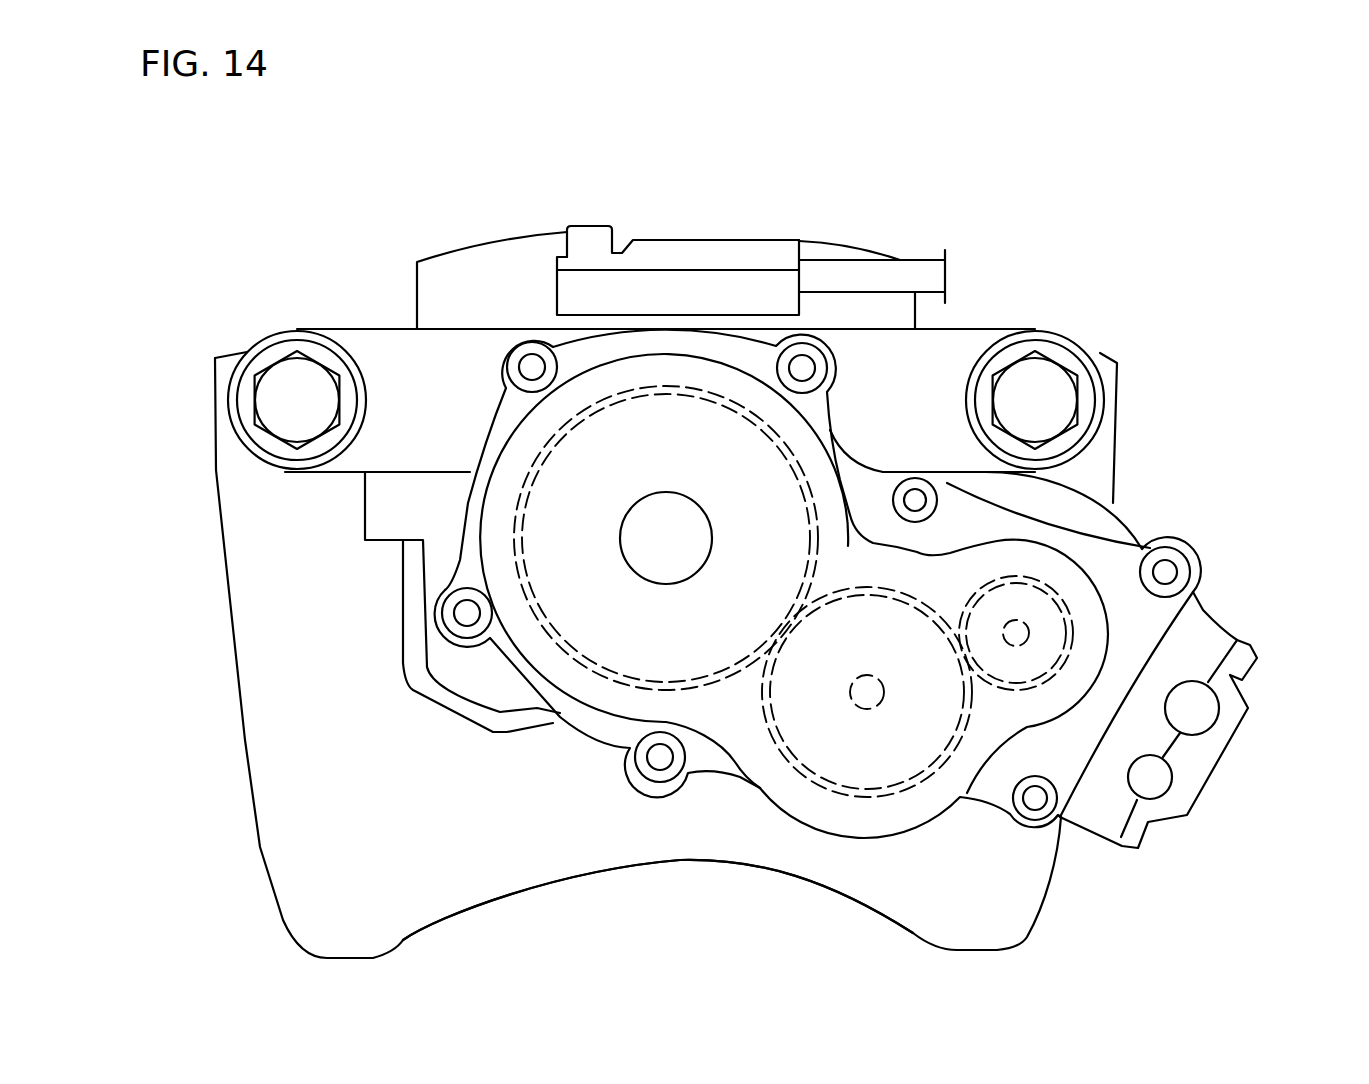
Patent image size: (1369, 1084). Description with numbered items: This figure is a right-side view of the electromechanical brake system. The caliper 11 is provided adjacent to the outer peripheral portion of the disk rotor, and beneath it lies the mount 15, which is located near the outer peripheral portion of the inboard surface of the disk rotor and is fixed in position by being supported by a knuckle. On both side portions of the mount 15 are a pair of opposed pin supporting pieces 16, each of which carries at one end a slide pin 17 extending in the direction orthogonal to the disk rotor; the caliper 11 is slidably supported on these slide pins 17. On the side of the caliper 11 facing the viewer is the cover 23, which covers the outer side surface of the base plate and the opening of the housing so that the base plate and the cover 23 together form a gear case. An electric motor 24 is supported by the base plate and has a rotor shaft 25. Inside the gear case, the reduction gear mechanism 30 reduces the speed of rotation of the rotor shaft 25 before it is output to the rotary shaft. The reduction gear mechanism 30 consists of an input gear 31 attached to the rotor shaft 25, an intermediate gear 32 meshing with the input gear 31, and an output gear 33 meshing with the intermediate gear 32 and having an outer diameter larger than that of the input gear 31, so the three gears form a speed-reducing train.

The caliper 11 is at (445, 259).
The mount 15 is at (558, 858).
The pin supporting pieces 16 is at (232, 483).
The slide pin 17 is at (302, 373).
The cover 23 is at (708, 370).
The electric motor 24 is at (1103, 517).
The rotor shaft 25 is at (1020, 634).
The reduction gear mechanism 30 is at (877, 798).
The input gear 31 is at (1070, 615).
The intermediate gear 32 is at (827, 777).
The output gear 33 is at (603, 675).